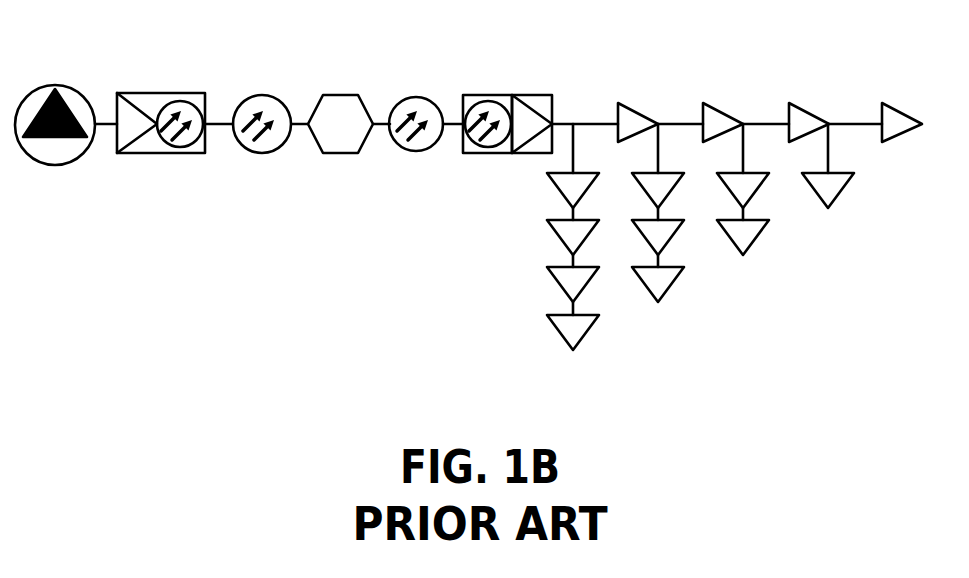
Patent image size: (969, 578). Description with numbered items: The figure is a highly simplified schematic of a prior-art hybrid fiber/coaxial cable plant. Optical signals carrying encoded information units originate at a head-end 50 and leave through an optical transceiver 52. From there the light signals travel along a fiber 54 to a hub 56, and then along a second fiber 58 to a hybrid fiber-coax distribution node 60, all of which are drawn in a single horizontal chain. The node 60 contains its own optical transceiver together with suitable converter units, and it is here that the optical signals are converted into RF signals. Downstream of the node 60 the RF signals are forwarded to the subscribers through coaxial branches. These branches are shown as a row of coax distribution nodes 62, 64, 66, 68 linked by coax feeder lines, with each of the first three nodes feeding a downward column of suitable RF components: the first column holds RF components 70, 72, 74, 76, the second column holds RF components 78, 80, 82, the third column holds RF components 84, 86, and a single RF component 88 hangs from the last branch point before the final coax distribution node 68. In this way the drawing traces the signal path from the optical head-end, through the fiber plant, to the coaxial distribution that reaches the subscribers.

The head-end 50 is at (55, 86).
The optical transceiver 52 is at (160, 93).
The fiber 54 is at (256, 95).
The hub 56 is at (340, 95).
The fiber 58 is at (413, 97).
The hybrid fiber-coax distribution node 60 is at (505, 95).
The coax distribution node 62 is at (639, 112).
The coax distribution node 64 is at (725, 112).
The coax distribution node 66 is at (810, 112).
The coax distribution node 68 is at (897, 112).
The RF component 70 is at (577, 173).
The RF component 72 is at (577, 220).
The RF component 74 is at (577, 267).
The RF component 76 is at (577, 315).
The RF component 78 is at (662, 173).
The RF component 80 is at (662, 220).
The RF component 82 is at (662, 267).
The RF component 84 is at (747, 173).
The RF component 86 is at (747, 220).
The RF component 88 is at (832, 173).